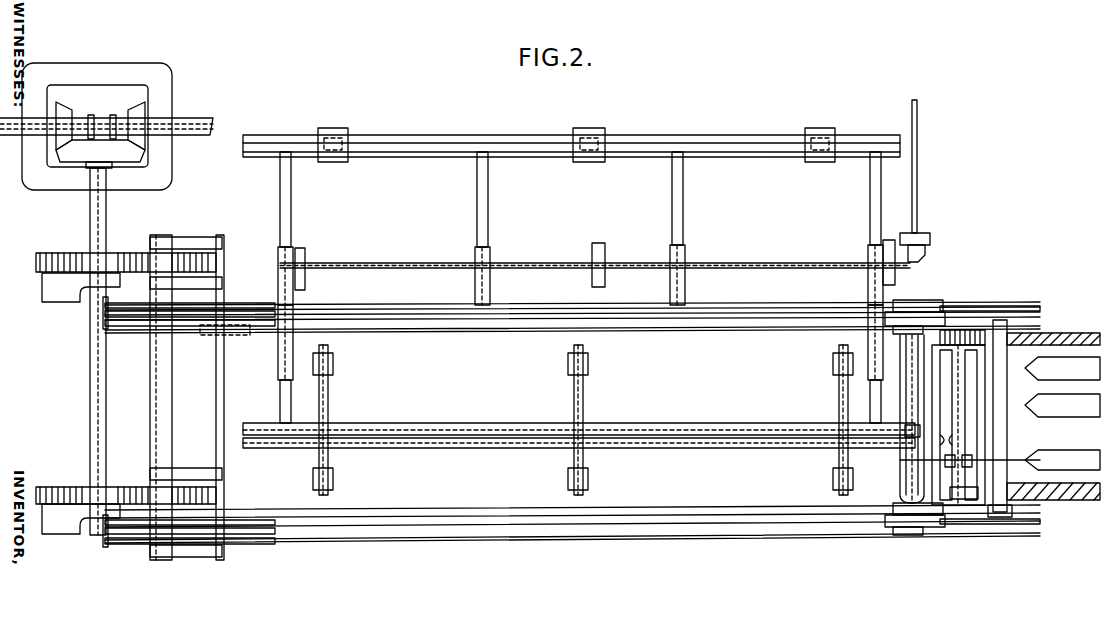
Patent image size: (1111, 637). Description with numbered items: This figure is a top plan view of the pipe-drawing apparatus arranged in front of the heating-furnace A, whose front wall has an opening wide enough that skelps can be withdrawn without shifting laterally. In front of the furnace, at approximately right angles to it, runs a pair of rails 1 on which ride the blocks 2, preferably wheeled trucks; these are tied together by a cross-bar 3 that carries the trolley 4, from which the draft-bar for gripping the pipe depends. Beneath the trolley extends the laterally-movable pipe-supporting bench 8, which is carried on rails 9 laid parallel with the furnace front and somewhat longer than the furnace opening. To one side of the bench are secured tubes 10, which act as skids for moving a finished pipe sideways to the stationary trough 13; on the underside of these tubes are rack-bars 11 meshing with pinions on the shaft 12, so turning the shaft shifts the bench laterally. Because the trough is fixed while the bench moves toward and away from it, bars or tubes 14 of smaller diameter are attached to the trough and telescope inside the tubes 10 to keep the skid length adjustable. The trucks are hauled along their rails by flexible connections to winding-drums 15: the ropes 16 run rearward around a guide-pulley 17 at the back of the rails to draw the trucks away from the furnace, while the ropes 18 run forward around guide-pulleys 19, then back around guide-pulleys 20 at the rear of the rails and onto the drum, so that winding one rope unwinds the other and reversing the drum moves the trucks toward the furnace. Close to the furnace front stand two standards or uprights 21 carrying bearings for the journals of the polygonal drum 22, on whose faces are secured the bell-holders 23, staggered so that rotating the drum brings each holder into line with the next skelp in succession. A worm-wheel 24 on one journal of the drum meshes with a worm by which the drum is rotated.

The rails 1 is at (770, 322).
The blocks 2 is at (902, 312).
The cross-bar 3 is at (900, 458).
The trolley 4 is at (908, 428).
The pipe-supporting bench 8 is at (688, 448).
The rails 9 is at (328, 400).
The tubes 10 is at (280, 403).
The rack-bars 11 is at (278, 372).
The shaft 12 is at (754, 263).
The trough 13 is at (748, 157).
The bars or tubes 14 is at (291, 213).
The winding-drums 15 is at (135, 325).
The ropes 16 is at (402, 333).
The guide-pulley 17 is at (248, 328).
The ropes 18 is at (396, 315).
The guide-pulleys 19 is at (972, 311).
The guide-pulleys 20 is at (248, 305).
The standards or uprights 21 is at (953, 493).
The polygonal drum 22 is at (958, 425).
The bell-holders 23 is at (948, 440).
The worm-wheel 24 is at (1000, 325).
The heating-furnace A is at (1053, 400).